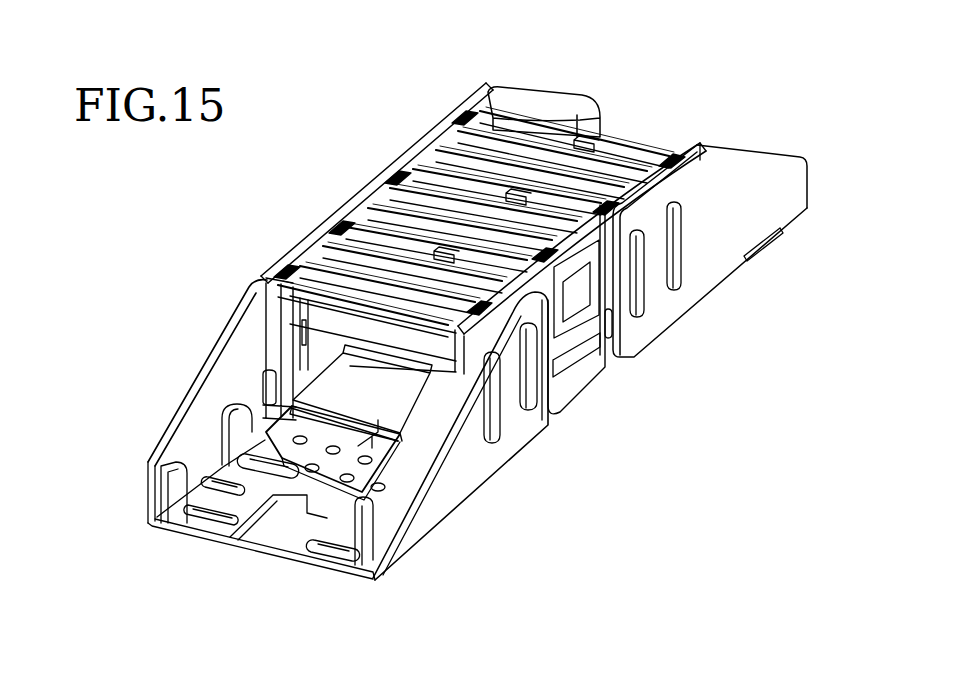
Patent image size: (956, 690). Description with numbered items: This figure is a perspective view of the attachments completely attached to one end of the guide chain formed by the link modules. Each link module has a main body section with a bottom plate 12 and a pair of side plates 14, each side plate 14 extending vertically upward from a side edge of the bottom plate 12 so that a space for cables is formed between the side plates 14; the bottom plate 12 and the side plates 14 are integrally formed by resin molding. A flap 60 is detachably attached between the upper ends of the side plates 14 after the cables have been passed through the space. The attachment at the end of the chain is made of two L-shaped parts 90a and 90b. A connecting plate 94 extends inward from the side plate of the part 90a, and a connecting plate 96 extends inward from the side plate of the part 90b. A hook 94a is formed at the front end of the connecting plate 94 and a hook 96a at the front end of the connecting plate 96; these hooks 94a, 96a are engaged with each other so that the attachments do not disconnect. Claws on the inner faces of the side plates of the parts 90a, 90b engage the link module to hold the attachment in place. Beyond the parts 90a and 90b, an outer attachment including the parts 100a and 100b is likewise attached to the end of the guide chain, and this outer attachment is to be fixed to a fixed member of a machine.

The bottom plate 12 is at (338, 393).
The side plate 14 is at (607, 355).
The flap 60 is at (437, 177).
The part 90a is at (468, 483).
The part 90b is at (202, 417).
The connecting plate 94 is at (293, 550).
The hook 94a is at (273, 517).
The connecting plate 96 is at (203, 527).
The hook 96a is at (327, 518).
The part 100a is at (710, 272).
The part 100b is at (523, 103).